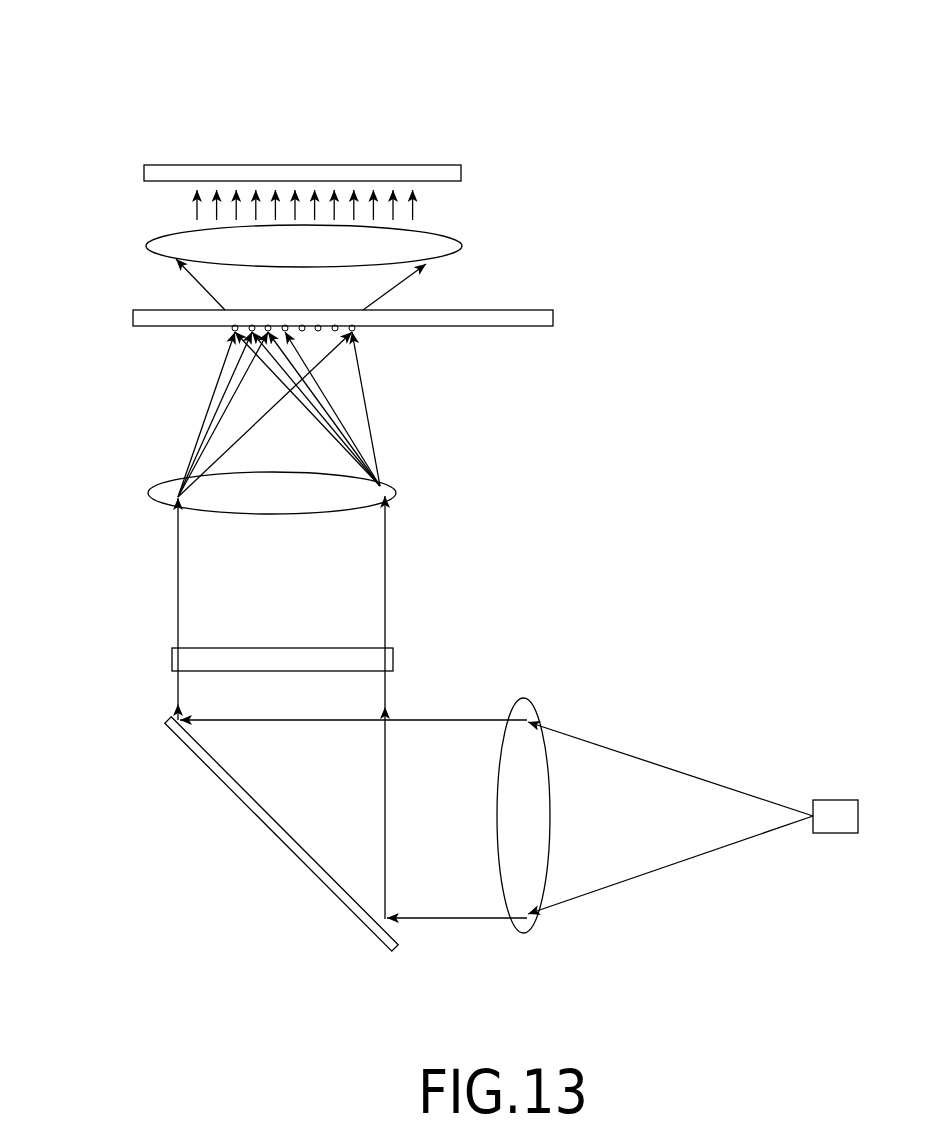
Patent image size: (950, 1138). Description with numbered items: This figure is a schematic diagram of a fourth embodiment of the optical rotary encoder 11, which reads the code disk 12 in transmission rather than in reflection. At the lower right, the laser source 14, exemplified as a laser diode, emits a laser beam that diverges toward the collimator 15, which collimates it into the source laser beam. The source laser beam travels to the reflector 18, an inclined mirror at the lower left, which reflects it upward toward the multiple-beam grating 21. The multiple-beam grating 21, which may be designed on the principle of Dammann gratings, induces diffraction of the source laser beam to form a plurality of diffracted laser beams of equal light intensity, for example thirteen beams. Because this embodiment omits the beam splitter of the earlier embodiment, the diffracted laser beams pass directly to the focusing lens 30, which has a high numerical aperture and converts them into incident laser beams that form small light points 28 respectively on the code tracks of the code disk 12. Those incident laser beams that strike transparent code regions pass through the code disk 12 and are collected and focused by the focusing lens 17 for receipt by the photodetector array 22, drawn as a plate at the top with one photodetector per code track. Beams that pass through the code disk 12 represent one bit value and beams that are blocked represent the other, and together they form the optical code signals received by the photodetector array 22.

The optical rotary encoder 11 is at (84, 93).
The photodetector array 22 is at (202, 165).
The focusing lens 17 is at (462, 245).
The code disk 12 is at (553, 317).
The light points 28 is at (307, 332).
The focusing lens 30 is at (394, 491).
The multiple-beam grating 21 is at (393, 658).
The reflector 18 is at (267, 828).
The collimator 15 is at (523, 698).
The laser source 14 is at (835, 800).